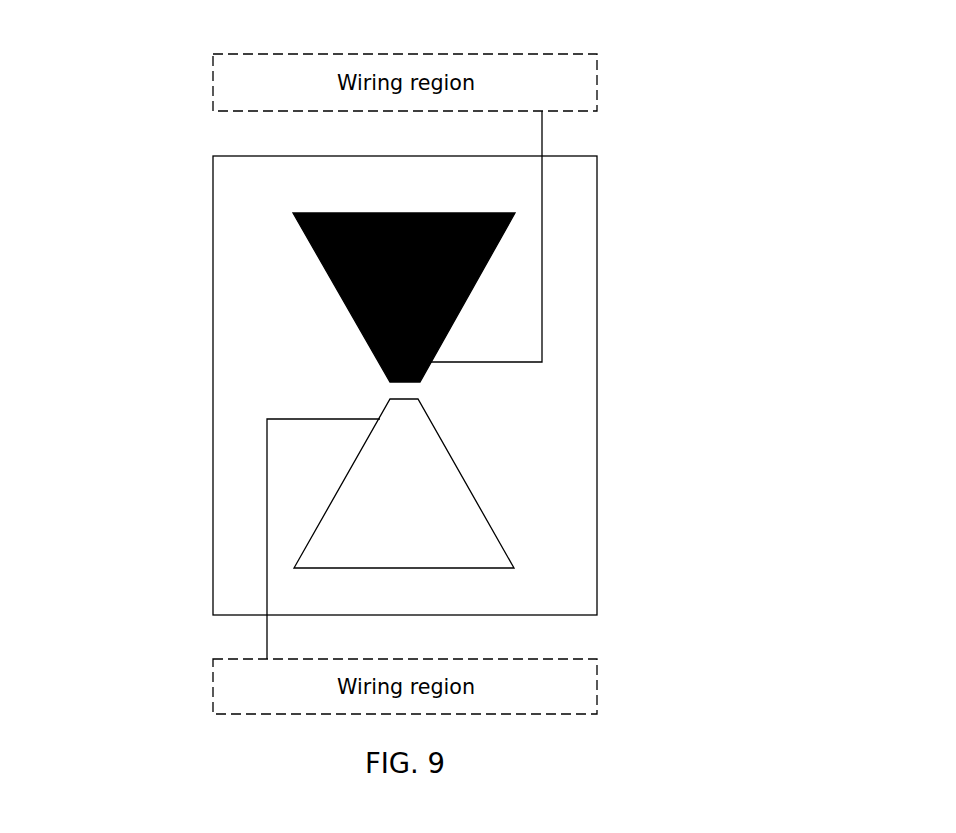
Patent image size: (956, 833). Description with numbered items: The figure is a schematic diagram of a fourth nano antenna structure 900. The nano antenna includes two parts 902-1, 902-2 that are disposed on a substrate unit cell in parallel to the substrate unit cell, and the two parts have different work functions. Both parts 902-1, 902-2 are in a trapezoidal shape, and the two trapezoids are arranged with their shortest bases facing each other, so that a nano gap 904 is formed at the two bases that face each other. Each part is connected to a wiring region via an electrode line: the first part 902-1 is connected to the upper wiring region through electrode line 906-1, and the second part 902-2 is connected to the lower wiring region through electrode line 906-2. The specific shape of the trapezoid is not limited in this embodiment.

The fourth nano antenna structure 900 is at (672, 33).
The first part of the nano antenna 902-1 is at (498, 235).
The second part of the nano antenna 902-2 is at (502, 550).
The nano gap 904 is at (447, 387).
The first electrode line 906-1 is at (543, 316).
The second electrode line 906-2 is at (267, 493).